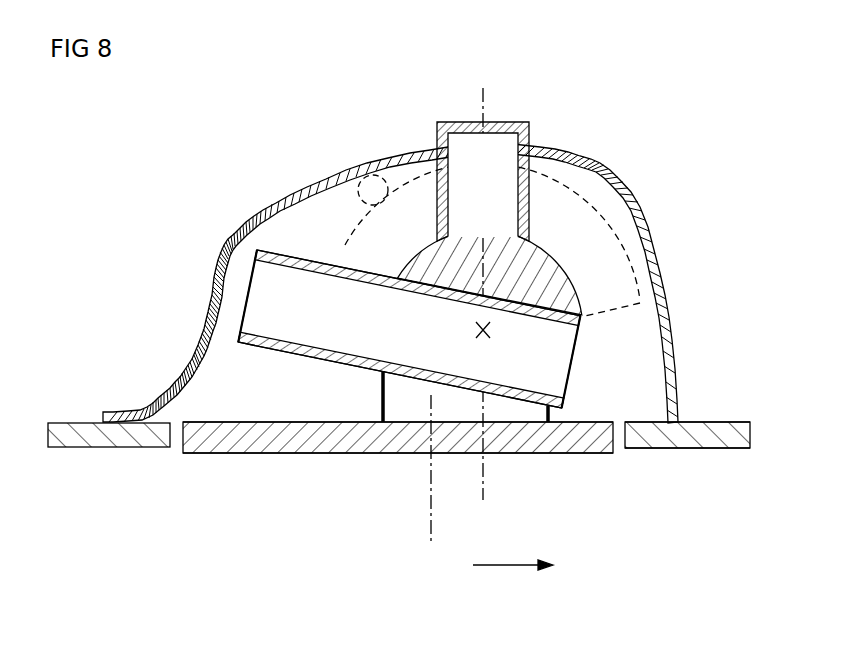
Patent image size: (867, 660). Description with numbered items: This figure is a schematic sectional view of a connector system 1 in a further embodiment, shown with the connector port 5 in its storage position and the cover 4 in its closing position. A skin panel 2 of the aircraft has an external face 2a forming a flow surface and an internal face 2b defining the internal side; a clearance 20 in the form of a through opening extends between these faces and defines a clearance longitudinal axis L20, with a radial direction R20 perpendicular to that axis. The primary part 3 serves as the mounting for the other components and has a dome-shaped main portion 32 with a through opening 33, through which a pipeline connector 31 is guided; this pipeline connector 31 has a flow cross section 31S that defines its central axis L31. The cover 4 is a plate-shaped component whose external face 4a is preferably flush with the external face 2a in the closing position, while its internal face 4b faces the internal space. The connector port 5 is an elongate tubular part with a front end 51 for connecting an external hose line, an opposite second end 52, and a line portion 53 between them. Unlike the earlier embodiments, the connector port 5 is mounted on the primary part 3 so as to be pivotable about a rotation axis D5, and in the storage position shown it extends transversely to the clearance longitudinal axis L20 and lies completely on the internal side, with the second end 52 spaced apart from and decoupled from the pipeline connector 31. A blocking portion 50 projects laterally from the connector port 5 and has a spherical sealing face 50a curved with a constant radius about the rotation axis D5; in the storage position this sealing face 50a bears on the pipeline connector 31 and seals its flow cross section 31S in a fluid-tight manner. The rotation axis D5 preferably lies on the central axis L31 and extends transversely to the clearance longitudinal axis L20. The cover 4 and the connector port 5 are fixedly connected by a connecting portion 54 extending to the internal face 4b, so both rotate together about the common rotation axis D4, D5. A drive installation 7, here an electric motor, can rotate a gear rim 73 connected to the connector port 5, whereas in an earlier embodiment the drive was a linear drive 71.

The connector system 1 is at (208, 146).
The skin panel 2 is at (701, 452).
The external face 2a is at (708, 455).
The internal face 2b is at (708, 416).
The primary part 3 is at (398, 272).
The cover 4 is at (398, 471).
The external face of the cover 4a is at (338, 455).
The internal face of the cover 4b is at (216, 424).
The connector port 5 is at (477, 342).
The drive installation 7 is at (372, 172).
The clearance 20 is at (172, 446).
The pipeline connector 31 is at (563, 200).
The flow cross section 31S is at (455, 230).
The main portion 32 is at (206, 335).
The through opening 33 is at (435, 130).
The blocking portion 50 is at (557, 274).
The sealing face 50a is at (548, 248).
The front end 51 is at (247, 296).
The second end 52 is at (571, 362).
The line portion 53 is at (400, 370).
The connecting portion 54 is at (405, 412).
The linear drive 71 is at (373, 176).
The gear rim 73 is at (343, 247).
The rotation axis of the cover D4 is at (624, 348).
The rotation axis of the connector port D5 is at (495, 332).
The clearance longitudinal axis L20 is at (435, 525).
The central axis of the pipeline connector L31 is at (487, 100).
The radial direction R20 is at (497, 572).